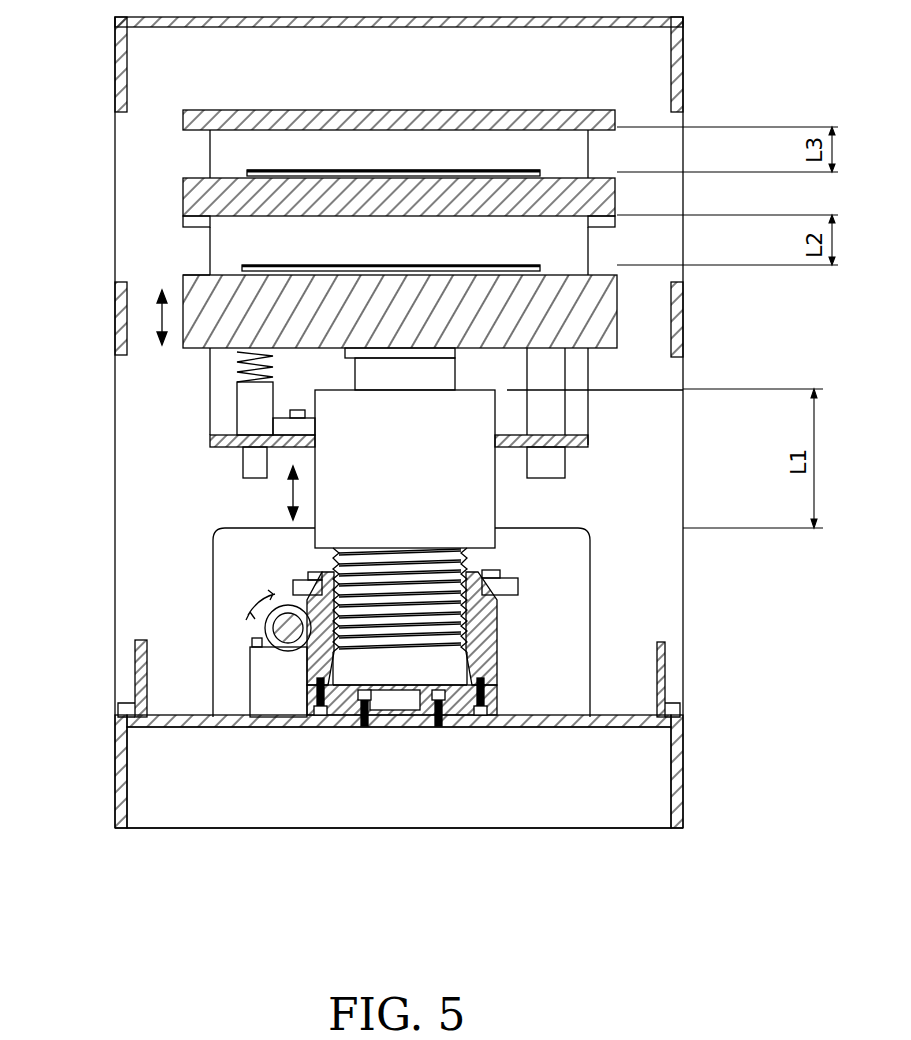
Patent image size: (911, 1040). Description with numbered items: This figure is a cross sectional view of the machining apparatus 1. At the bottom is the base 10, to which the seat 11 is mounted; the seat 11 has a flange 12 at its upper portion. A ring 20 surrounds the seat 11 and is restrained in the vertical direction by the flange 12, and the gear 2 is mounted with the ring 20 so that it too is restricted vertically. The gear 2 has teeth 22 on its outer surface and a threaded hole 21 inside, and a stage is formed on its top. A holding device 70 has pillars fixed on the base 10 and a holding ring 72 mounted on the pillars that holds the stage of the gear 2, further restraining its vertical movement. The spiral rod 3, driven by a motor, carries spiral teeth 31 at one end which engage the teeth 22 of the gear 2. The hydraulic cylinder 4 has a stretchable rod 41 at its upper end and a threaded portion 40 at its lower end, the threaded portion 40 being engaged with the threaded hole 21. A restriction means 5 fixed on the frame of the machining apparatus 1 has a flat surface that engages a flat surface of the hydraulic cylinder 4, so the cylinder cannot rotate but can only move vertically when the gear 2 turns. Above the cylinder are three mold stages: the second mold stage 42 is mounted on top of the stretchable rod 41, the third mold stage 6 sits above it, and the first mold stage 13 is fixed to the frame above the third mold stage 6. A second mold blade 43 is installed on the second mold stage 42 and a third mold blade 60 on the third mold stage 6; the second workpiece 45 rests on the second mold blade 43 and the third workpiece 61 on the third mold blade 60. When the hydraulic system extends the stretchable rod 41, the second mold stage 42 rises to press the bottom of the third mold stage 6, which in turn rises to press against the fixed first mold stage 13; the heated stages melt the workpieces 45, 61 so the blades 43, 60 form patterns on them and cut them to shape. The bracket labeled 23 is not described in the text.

The machining apparatus 1 is at (782, 371).
The gear 2 is at (485, 656).
The spiral rod 3 is at (262, 632).
The hydraulic cylinder 4 is at (470, 470).
The restriction means 5 is at (285, 425).
The third mold stage 6 is at (183, 192).
The base 10 is at (640, 781).
The seat 11 is at (436, 712).
The flange 12 is at (488, 706).
The first mold stage 13 is at (585, 118).
The ring 20 is at (450, 704).
The threaded hole 21 is at (452, 668).
The teeth 22 is at (495, 623).
The bracket 23 is at (315, 572).
The spiral teeth 31 is at (290, 630).
The threaded portion 40 is at (593, 548).
The stretchable rod 41 is at (425, 370).
The second mold stage 42 is at (585, 285).
The second mold blade 43 is at (205, 276).
The second workpiece 45 is at (250, 265).
The third mold blade 60 is at (257, 175).
The third workpiece 61 is at (318, 170).
The holding device 70 is at (283, 588).
The holding ring 72 is at (512, 582).